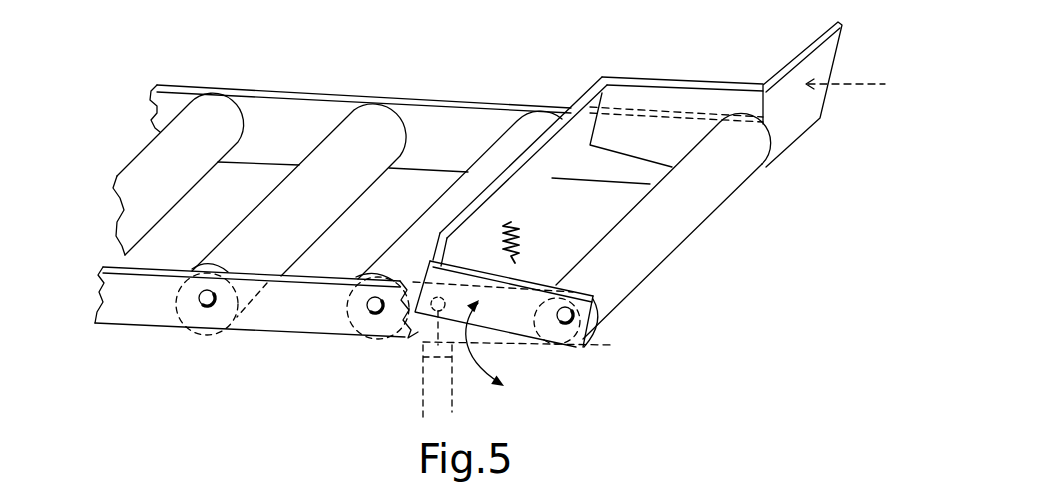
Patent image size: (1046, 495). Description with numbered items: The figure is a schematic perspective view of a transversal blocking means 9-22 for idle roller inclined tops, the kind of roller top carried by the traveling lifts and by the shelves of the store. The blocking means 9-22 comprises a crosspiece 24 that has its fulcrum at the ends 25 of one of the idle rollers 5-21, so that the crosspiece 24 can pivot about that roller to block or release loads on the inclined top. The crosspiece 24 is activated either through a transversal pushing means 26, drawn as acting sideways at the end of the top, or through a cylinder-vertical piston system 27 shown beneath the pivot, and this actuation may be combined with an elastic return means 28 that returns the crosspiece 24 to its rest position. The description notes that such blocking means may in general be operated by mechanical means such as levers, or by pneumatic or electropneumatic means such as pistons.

The idle roller 5-21 is at (328, 163).
The crosspiece 24 is at (530, 170).
The blocking means 9-22 is at (576, 91).
The transversal pushing means 26 is at (853, 85).
The elastic return means 28 is at (527, 238).
The ends of the idle roller 25 is at (566, 318).
The cylinder-vertical piston system 27 is at (425, 395).